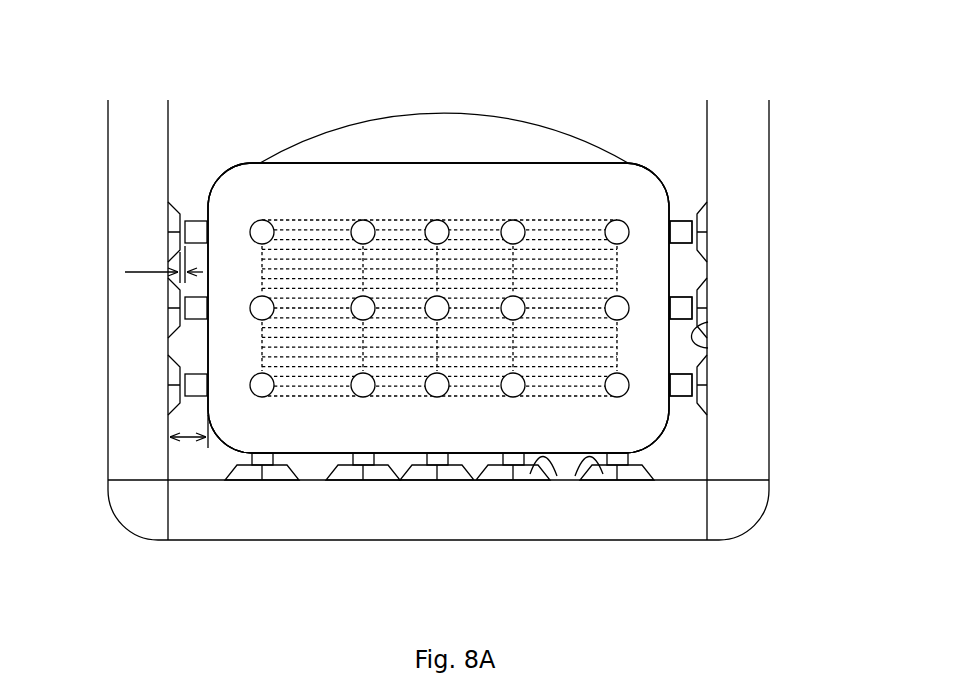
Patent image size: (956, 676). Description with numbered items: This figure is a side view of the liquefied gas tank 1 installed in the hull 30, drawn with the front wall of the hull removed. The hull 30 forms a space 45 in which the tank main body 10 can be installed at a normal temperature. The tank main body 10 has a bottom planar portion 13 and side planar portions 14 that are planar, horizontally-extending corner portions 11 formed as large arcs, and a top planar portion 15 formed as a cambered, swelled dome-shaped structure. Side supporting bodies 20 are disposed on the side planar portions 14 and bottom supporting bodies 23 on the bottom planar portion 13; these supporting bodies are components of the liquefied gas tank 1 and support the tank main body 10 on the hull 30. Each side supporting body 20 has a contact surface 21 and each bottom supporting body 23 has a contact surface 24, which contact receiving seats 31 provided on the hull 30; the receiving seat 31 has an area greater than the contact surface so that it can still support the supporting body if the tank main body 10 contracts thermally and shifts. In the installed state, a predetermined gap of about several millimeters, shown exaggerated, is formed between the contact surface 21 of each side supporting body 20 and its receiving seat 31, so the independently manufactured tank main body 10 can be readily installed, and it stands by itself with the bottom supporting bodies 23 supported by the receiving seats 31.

The liquefied gas tank 1 is at (572, 122).
The tank main body 10 is at (630, 161).
The corner portion 11 is at (223, 170).
The bottom planar portion 13 is at (439, 529).
The side planar portion 14 is at (206, 345).
The top planar portion 15 is at (363, 125).
The side supporting body 20 is at (252, 220).
The contact surface 21 is at (694, 235).
The bottom supporting body 23 is at (438, 464).
The contact surface 24 is at (357, 467).
The hull 30 is at (703, 448).
The receiving seat 31 is at (550, 468).
The space 45 is at (192, 172).